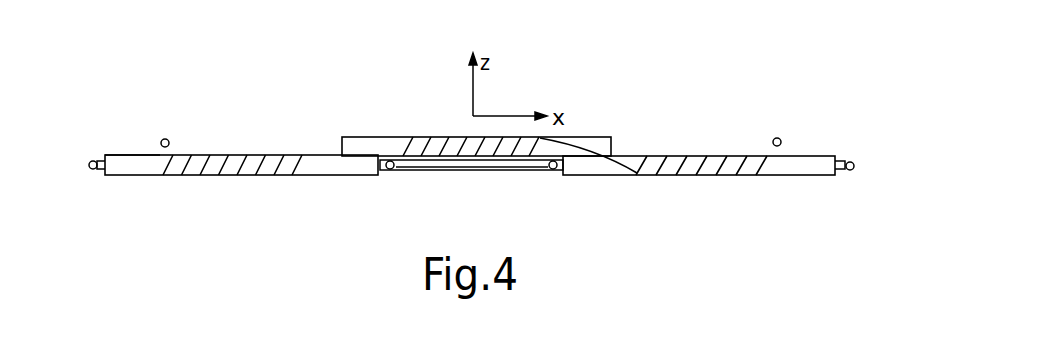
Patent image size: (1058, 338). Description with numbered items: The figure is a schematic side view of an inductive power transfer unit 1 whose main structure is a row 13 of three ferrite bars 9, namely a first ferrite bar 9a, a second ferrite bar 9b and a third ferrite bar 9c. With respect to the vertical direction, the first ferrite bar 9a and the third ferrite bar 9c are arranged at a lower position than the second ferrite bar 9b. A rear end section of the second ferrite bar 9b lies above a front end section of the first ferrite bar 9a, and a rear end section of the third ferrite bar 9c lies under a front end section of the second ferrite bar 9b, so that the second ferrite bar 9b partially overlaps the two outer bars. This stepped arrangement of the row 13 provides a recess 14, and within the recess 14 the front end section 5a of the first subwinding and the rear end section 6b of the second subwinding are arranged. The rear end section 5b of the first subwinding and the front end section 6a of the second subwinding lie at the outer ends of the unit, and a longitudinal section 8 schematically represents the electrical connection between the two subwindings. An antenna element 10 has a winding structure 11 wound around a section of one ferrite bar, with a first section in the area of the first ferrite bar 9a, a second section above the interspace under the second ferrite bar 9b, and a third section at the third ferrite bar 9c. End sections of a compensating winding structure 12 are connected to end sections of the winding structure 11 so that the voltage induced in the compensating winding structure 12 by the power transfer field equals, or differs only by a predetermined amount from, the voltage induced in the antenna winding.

The inductive power transfer unit 1 is at (207, 207).
The front end section of the first subwinding 5a is at (390, 170).
The rear end section of the first subwinding 5b is at (93, 172).
The front end section of the second subwinding 6a is at (853, 158).
The rear end section of the second subwinding 6b is at (553, 170).
The longitudinal section 8 is at (460, 163).
The ferrite bars 9 is at (474, 159).
The first ferrite bar 9a is at (315, 168).
The second ferrite bar 9b is at (587, 137).
The third ferrite bar 9c is at (803, 165).
The antenna element 10 is at (707, 143).
The winding structure of the antenna element 11 is at (618, 170).
The compensating winding structure 12 is at (168, 139).
The row of ferrite bars 13 is at (118, 155).
The recess 14 is at (484, 170).